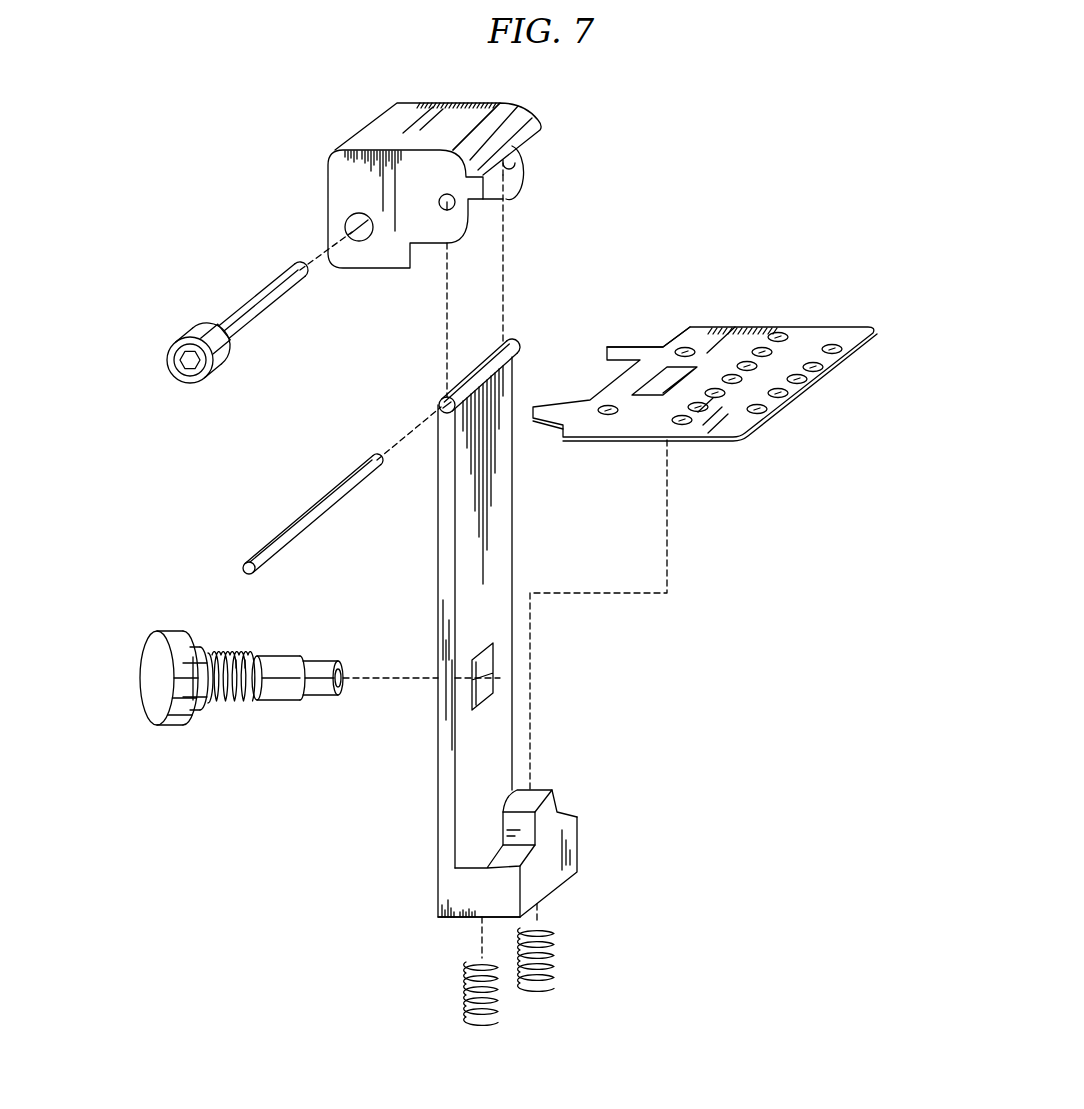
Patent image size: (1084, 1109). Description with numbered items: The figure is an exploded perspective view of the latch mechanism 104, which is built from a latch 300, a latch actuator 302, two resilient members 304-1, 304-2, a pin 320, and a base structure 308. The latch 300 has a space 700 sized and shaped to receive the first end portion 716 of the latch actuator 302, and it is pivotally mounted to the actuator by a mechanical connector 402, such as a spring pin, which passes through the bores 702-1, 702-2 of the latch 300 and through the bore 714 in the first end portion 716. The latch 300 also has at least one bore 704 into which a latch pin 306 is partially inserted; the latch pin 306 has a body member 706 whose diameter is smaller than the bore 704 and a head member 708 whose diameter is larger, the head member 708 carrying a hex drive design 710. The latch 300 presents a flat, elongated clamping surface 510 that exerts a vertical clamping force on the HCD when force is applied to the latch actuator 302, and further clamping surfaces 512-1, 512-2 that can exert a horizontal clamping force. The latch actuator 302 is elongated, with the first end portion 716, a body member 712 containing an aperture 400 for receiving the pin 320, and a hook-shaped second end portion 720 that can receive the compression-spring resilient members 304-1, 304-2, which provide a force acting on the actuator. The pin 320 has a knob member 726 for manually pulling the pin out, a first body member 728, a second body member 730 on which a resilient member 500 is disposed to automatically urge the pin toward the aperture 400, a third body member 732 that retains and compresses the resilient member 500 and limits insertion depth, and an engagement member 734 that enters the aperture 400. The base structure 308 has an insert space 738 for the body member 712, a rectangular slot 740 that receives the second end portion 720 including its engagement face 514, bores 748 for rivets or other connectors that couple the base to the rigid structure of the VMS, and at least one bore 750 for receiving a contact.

The latch mechanism 104 is at (666, 94).
The latch 300 is at (396, 104).
The flat, elongated clamping surface 510 is at (540, 141).
The bore 702-2 is at (515, 166).
The flat, elongated clamping surface 512-2 is at (520, 188).
The space 700 is at (506, 197).
The bore 702-1 is at (456, 208).
The flat, elongated clamping surface 512-1 is at (450, 242).
The bore 704 is at (345, 228).
The latch pin 306 is at (180, 265).
The body member 706 is at (252, 303).
The head member 708 is at (184, 341).
The hex drive design 710 is at (171, 382).
The bore 714 is at (442, 399).
The first end portion 716 is at (420, 409).
The mechanical connector 402 is at (292, 518).
The latch actuator 302 is at (438, 540).
The body member 712 is at (528, 518).
The aperture 400 is at (472, 700).
The engagement face 514 is at (543, 788).
The second end portion 720 is at (403, 869).
The resilient member 304-1 is at (466, 965).
The resilient member 304-2 is at (554, 932).
The base structure 308 is at (876, 261).
The insert space 738 is at (598, 364).
The rectangular slot 740 is at (650, 371).
The bores 748 is at (684, 347).
The bore 750 is at (733, 375).
The pin 320 is at (140, 660).
The knob member 726 is at (170, 726).
The first body member 728 is at (200, 652).
The second body member 730 is at (249, 704).
The resilient member 500 is at (241, 667).
The third body member 732 is at (264, 700).
The engagement member 734 is at (313, 663).